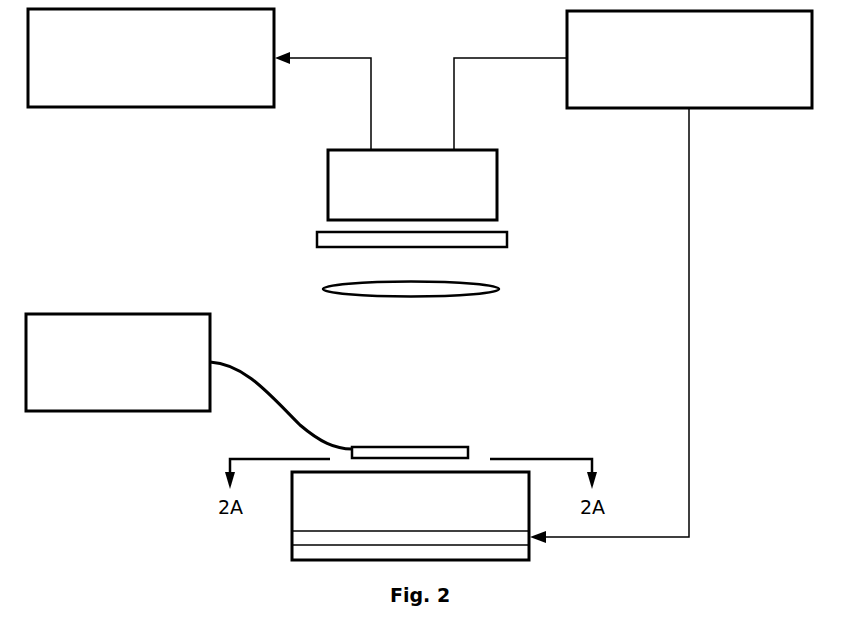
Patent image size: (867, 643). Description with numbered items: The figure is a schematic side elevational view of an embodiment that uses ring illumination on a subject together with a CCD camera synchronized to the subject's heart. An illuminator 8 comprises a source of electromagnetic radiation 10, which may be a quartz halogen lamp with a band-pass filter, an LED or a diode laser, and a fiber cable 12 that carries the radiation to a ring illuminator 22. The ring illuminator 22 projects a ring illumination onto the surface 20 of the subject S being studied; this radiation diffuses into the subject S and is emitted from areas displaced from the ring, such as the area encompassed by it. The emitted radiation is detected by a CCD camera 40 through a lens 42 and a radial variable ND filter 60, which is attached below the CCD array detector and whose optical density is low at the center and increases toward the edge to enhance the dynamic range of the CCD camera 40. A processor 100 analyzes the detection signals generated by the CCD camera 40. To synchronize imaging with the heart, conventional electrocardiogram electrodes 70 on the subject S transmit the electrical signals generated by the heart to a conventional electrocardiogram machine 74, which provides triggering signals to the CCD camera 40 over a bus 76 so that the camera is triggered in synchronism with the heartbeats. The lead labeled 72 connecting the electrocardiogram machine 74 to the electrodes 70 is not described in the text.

The processor 100 is at (200, 101).
The bus 76 is at (489, 57).
The CCD camera 40 is at (491, 188).
The radial variable ND filter 60 is at (500, 232).
The lens 42 is at (497, 287).
The electrocardiogram machine 74 is at (665, 103).
The ECG lead 72 is at (692, 313).
The source of electromagnetic radiation 10 is at (86, 318).
The illuminator 8 is at (274, 349).
The fiber cable 12 is at (286, 405).
The ring illuminator 22 is at (424, 447).
The surface 20 is at (463, 476).
The electrocardiogram electrodes 70 is at (294, 538).
The subject S is at (531, 508).